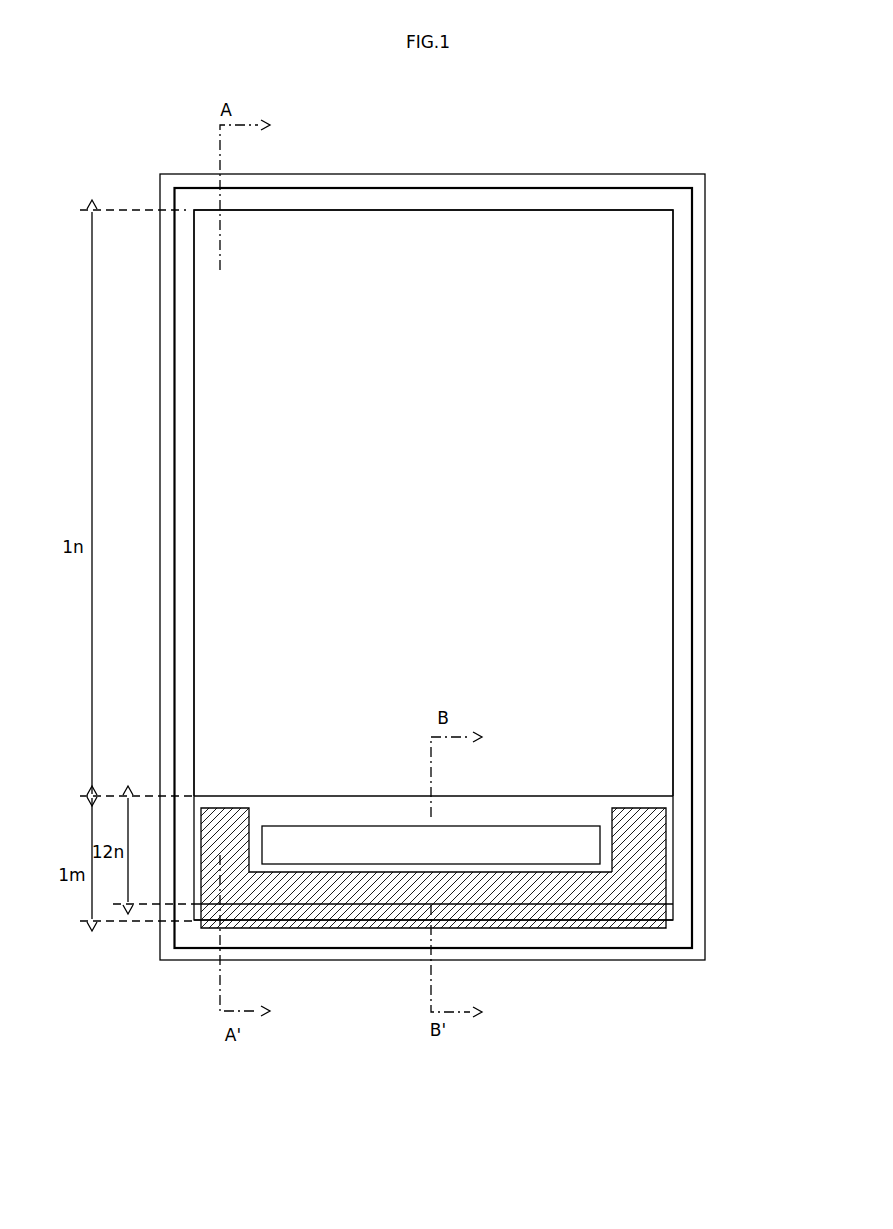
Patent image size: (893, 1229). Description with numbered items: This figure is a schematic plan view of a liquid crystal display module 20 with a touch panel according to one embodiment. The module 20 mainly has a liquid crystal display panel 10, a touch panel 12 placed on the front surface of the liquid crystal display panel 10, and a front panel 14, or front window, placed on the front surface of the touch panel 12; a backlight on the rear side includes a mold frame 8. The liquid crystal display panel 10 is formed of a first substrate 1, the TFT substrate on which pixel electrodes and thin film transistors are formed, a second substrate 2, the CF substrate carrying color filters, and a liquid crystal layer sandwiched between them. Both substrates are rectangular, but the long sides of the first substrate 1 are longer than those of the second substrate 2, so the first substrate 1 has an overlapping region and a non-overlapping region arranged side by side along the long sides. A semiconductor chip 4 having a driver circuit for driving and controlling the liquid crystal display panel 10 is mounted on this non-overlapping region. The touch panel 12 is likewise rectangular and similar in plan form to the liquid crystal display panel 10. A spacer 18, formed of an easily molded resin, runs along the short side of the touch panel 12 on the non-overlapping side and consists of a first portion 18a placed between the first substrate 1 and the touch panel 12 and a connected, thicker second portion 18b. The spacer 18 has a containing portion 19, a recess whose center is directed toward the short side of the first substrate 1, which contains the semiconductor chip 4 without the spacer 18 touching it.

The liquid crystal display module 20 is at (601, 172).
The front panel 14 is at (705, 509).
The first substrate 1 is at (675, 802).
The second substrate 2 is at (329, 799).
The touch panel 12 is at (390, 906).
The liquid crystal display panel 10 is at (220, 451).
The mold frame 8 is at (682, 667).
The semiconductor chip 4 is at (489, 843).
The spacer 18 is at (442, 889).
The first portion 18a is at (582, 895).
The second portion 18b is at (562, 913).
The containing portion 19 is at (604, 817).